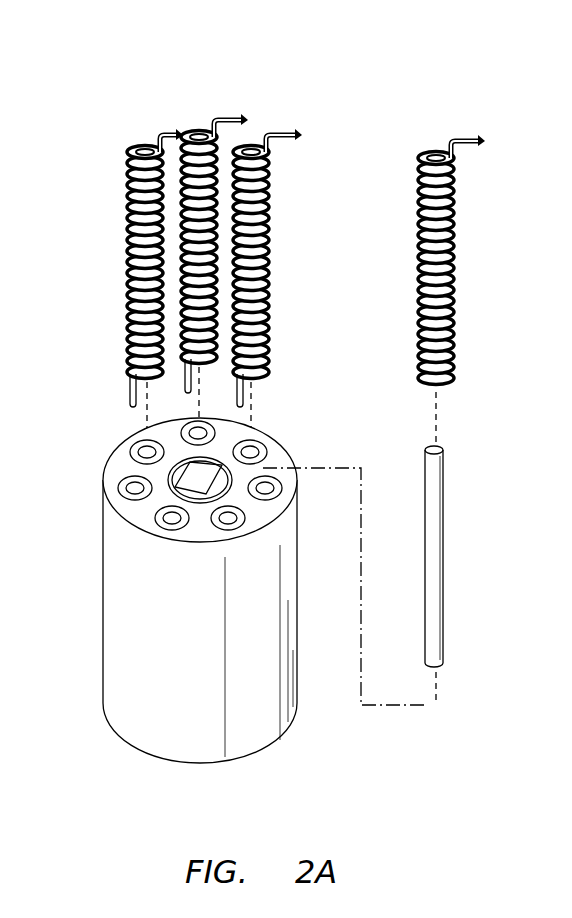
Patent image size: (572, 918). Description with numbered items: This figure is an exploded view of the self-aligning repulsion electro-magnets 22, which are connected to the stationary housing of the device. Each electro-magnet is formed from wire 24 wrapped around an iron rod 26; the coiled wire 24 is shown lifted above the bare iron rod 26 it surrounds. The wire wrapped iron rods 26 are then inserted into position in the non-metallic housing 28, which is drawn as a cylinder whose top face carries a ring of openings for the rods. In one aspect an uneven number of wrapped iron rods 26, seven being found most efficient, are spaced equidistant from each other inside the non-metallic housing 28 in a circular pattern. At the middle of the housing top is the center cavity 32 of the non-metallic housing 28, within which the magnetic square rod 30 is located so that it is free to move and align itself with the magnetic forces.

The self-aligning repulsion electro-magnets 22 is at (497, 370).
The wire 24 is at (128, 275).
The iron rod 26 is at (445, 520).
The non-metallic housing 28 is at (163, 737).
The magnetic square rod 30 is at (190, 483).
The center cavity 32 is at (210, 460).